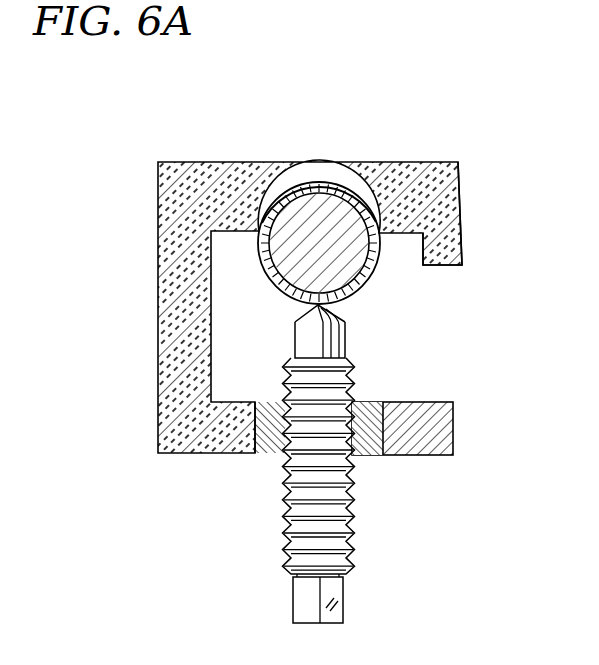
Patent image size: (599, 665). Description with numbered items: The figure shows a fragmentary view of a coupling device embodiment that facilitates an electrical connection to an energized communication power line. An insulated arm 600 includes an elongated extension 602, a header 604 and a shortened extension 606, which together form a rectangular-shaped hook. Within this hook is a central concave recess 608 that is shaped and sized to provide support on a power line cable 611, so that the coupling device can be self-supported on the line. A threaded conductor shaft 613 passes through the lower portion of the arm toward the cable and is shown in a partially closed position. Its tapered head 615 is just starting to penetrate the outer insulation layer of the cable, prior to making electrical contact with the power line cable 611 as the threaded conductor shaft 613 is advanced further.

The insulated arm 600 is at (100, 160).
The elongated extension 602 is at (160, 323).
The header 604 is at (325, 163).
The shortened extension 606 is at (460, 254).
The central concave recess 608 is at (291, 188).
The power line cable 611 is at (370, 270).
The threaded conductor shaft 613 is at (283, 503).
The tapered head 615 is at (310, 306).